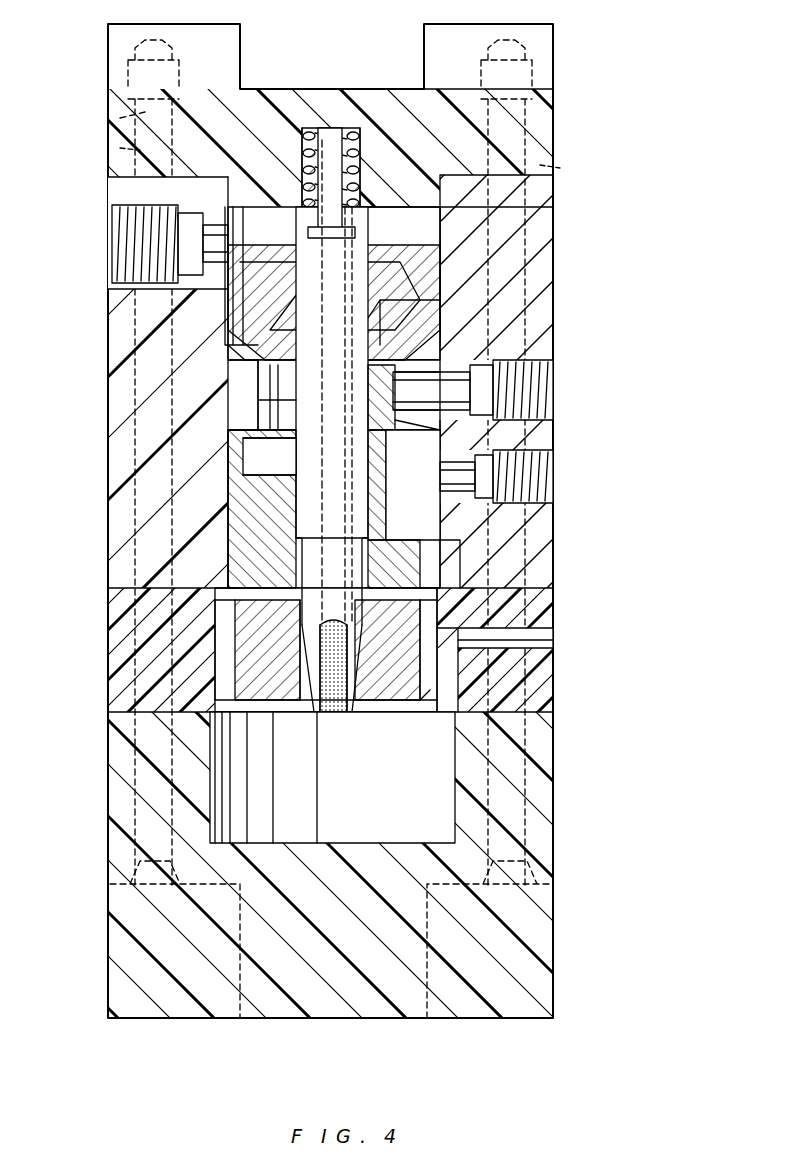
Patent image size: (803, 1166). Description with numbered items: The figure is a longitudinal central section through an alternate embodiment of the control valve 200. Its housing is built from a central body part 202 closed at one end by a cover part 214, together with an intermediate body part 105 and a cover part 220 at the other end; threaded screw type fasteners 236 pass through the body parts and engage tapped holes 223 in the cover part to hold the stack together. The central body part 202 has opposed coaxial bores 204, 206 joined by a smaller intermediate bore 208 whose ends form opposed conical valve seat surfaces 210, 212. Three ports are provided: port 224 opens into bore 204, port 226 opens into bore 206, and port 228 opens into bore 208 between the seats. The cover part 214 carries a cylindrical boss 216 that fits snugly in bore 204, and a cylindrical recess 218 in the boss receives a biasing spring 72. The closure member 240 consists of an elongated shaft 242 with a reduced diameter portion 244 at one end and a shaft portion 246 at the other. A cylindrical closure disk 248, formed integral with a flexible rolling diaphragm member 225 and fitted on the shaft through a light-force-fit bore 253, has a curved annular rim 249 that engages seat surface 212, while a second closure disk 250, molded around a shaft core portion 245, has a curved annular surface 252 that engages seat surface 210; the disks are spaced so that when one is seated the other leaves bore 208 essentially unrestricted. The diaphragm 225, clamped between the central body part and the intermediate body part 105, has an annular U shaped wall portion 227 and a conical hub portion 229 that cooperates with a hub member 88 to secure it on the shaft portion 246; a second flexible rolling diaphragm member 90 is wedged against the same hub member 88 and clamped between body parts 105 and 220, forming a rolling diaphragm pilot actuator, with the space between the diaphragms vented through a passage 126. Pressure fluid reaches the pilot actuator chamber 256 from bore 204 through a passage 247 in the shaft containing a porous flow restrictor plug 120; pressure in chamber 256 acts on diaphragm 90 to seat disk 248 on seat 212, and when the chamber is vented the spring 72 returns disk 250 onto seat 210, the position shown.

The biasing spring 72 is at (352, 132).
The hub member 88 is at (422, 700).
The flexible rolling diaphragm member 90 is at (245, 715).
The intermediate body part 105 is at (556, 685).
The flow restrictor plug 120 is at (392, 725).
The vent passage 126 is at (556, 632).
The control valve 200 is at (572, 302).
The central body part 202 is at (556, 440).
The bore 204 is at (418, 242).
The bore 206 is at (445, 545).
The intermediate bore 208 is at (278, 400).
The valve seat surface 210 is at (430, 354).
The valve seat surface 212 is at (245, 450).
The cover part 214 is at (545, 138).
The cylindrical boss 216 is at (412, 203).
The cylindrical recess 218 is at (332, 128).
The cover part 220 is at (558, 752).
The tapped holes 223 is at (135, 120).
The port 224 is at (112, 265).
The flexible rolling diaphragm member 225 is at (463, 572).
The port 226 is at (556, 466).
The annular U shaped wall portion 227 is at (460, 607).
The port 228 is at (556, 378).
The conical hub portion 229 is at (240, 590).
The threaded screw type fasteners 236 is at (120, 150).
The closure member 240 is at (262, 540).
The closure member shaft 242 is at (395, 400).
The reduced diameter portion 244 is at (243, 206).
The shaft core portion 245 is at (238, 326).
The shaft portion 246 is at (312, 712).
The passage 247 is at (335, 712).
The cylindrical closure disk 248 is at (393, 484).
The curved annular rim 249 is at (415, 420).
The second closure disk 250 is at (432, 305).
The curved annular surface 252 is at (255, 362).
The bore 253 is at (296, 500).
The pilot actuator chamber 256 is at (392, 830).